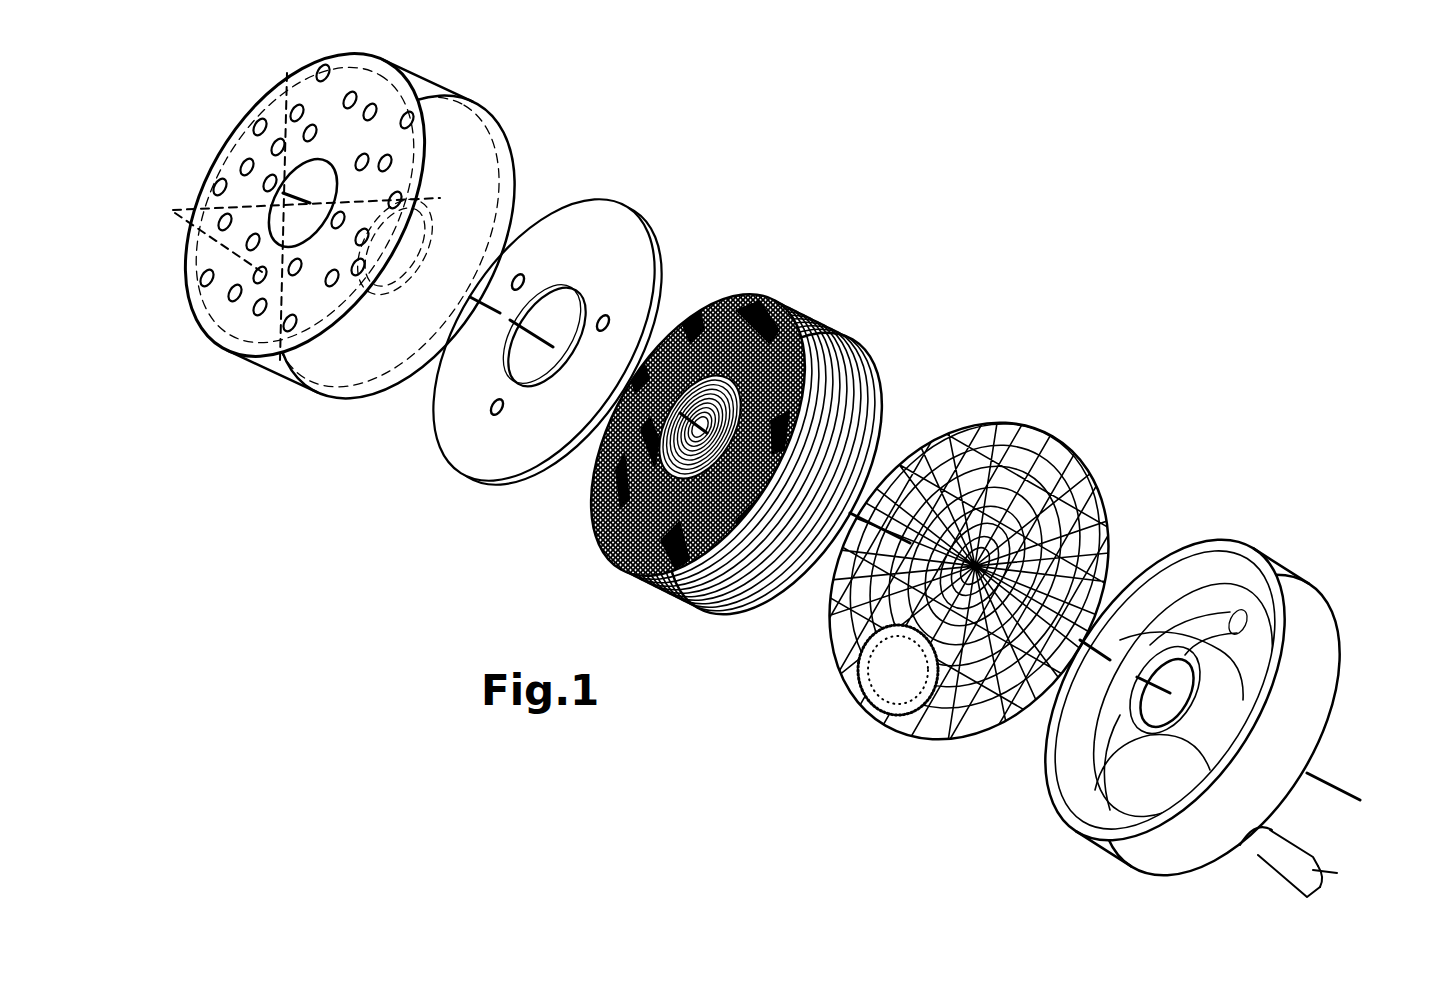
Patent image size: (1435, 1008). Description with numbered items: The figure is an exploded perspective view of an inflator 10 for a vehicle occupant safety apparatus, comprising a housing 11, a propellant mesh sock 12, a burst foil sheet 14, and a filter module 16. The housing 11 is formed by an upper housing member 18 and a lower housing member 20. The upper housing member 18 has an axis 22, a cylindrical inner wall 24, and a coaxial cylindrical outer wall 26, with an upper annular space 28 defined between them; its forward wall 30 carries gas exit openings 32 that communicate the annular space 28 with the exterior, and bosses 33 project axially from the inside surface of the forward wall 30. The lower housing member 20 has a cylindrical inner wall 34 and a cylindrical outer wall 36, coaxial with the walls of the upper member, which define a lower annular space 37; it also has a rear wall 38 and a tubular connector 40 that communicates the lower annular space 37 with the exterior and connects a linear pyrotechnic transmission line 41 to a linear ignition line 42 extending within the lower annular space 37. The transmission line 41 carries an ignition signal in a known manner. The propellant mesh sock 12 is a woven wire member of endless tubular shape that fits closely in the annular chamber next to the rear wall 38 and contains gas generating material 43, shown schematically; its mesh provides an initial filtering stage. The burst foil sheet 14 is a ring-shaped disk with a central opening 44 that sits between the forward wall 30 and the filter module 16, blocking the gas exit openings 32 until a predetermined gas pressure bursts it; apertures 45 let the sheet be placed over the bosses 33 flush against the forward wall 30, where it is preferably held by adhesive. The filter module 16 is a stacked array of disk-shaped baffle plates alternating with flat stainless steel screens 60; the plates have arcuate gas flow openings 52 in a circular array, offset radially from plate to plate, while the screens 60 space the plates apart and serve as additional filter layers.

The inflator 10 is at (1040, 239).
The housing 11 is at (513, 132).
The propellant mesh sock 12 is at (975, 566).
The burst foil sheet 14 is at (552, 331).
The filter module 16 is at (730, 414).
The upper housing member 18 is at (310, 205).
The lower housing member 20 is at (1213, 685).
The axis 22 is at (235, 163).
The cylindrical inner wall 24 is at (405, 240).
The cylindrical outer wall 26 is at (443, 123).
The upper annular space 28 is at (372, 345).
The forward wall 30 is at (380, 93).
The gas exit openings 32 is at (314, 68).
The bosses 33 is at (163, 206).
The cylindrical inner wall 34 is at (1100, 745).
The cylindrical outer wall 36 is at (1318, 622).
The lower annular space 37 is at (1200, 620).
The rear wall 38 is at (1257, 667).
The tubular connector 40 is at (1257, 847).
The linear pyrotechnic transmission line 41 is at (1313, 867).
The linear ignition line 42 is at (1207, 580).
The gas generating material 43 is at (873, 692).
The central opening 44 is at (505, 380).
The apertures 45 is at (512, 290).
The gas flow openings 52 is at (802, 316).
The screens 60 is at (603, 523).